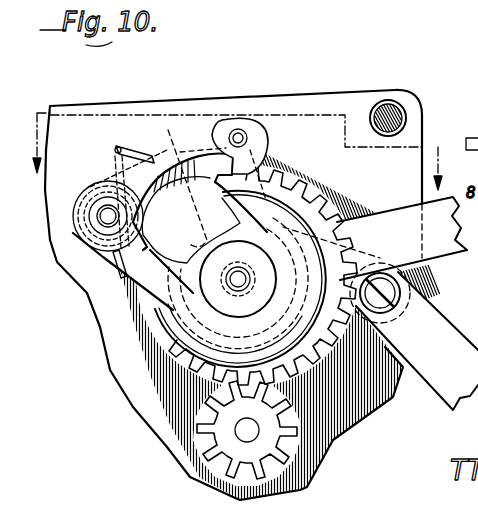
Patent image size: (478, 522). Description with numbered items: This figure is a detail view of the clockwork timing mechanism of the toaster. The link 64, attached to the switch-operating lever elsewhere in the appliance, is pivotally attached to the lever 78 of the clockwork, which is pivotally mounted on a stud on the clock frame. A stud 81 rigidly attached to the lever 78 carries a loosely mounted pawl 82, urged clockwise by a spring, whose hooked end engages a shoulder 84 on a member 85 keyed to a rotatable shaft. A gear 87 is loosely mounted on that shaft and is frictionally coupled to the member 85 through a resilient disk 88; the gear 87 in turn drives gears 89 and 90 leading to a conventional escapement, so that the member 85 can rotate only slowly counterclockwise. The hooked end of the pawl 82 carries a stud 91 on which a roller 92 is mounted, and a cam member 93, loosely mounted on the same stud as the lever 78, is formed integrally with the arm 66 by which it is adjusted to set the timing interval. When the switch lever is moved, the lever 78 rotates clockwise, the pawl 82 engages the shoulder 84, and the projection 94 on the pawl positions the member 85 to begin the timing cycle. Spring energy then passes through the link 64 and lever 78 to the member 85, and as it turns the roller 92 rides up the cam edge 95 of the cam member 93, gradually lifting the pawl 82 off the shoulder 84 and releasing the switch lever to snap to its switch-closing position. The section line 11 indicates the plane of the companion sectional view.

The lever 78 is at (137, 283).
The section line 11 is at (428, 148).
The resilient disk 88 is at (193, 335).
The gear 87 is at (187, 370).
The gear 90 is at (210, 433).
The gear 89 is at (217, 463).
The member 85 is at (102, 190).
The cam member 93 is at (203, 244).
The shoulder 84 is at (225, 176).
The roller 92 is at (252, 143).
The stud 91 is at (229, 138).
The stud 81 is at (103, 217).
The pawl 82 is at (143, 140).
The projection 94 is at (113, 259).
The cam edge 95 is at (168, 130).
The arm 66 is at (387, 222).
The member (link) 64 is at (443, 383).